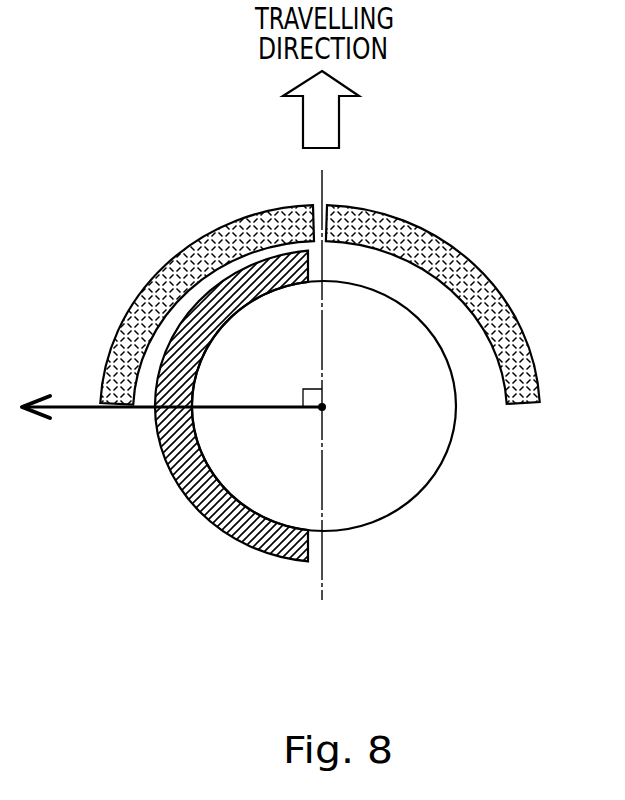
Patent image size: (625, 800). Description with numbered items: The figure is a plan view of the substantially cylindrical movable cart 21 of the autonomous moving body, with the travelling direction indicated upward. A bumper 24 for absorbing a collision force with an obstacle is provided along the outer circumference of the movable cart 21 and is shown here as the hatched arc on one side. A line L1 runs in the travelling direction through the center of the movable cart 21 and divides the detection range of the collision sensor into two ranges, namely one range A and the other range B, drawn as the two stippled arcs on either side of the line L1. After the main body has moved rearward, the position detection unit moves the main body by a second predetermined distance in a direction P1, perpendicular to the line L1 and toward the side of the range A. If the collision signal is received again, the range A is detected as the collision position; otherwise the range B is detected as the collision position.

The movable cart 21 is at (423, 470).
The bumper 24 is at (178, 455).
The one range A is at (197, 238).
The other range B is at (437, 234).
The line L1 is at (325, 182).
The direction P1 is at (174, 393).